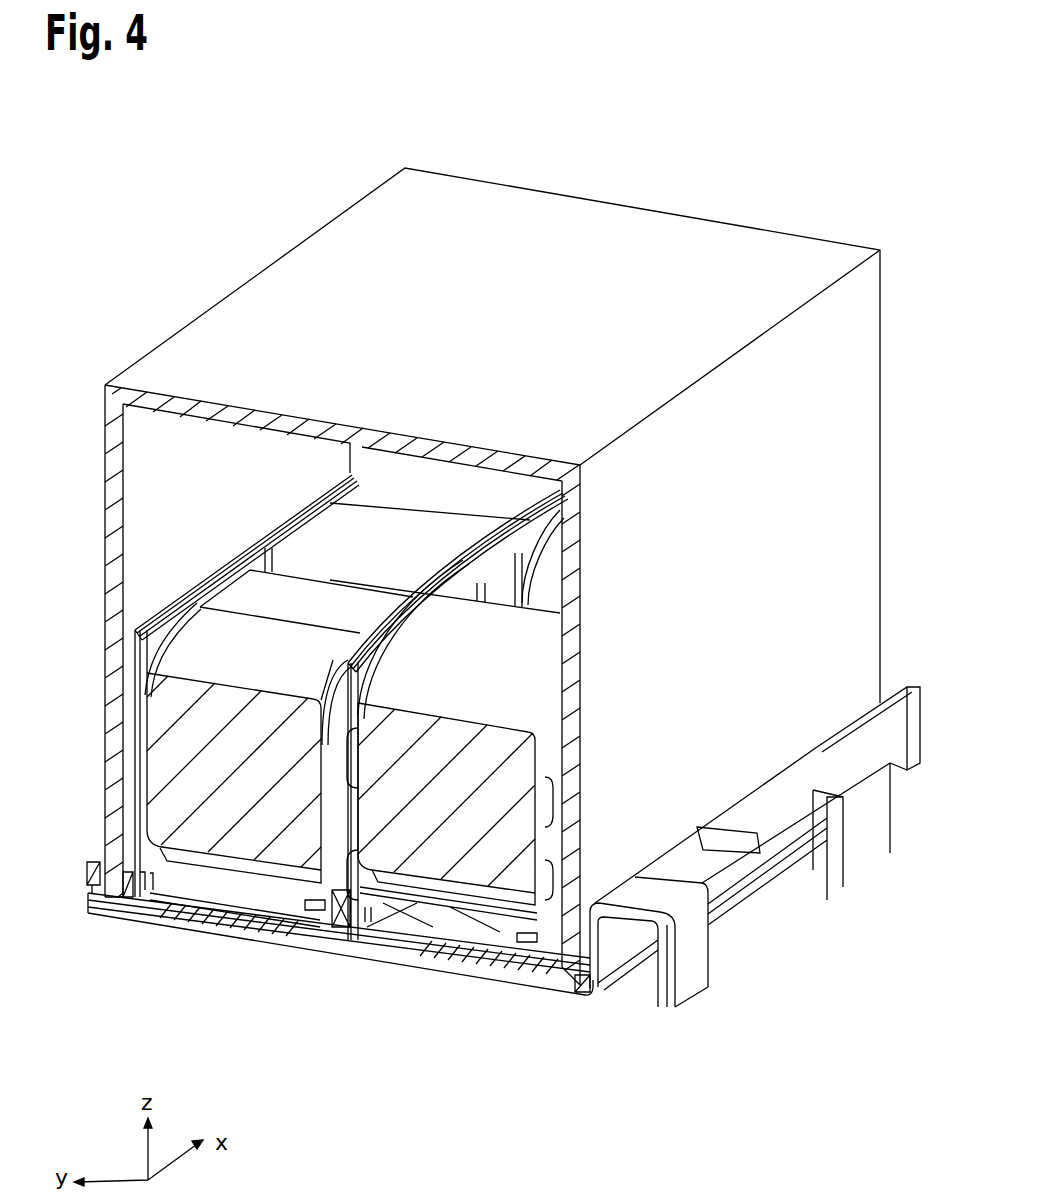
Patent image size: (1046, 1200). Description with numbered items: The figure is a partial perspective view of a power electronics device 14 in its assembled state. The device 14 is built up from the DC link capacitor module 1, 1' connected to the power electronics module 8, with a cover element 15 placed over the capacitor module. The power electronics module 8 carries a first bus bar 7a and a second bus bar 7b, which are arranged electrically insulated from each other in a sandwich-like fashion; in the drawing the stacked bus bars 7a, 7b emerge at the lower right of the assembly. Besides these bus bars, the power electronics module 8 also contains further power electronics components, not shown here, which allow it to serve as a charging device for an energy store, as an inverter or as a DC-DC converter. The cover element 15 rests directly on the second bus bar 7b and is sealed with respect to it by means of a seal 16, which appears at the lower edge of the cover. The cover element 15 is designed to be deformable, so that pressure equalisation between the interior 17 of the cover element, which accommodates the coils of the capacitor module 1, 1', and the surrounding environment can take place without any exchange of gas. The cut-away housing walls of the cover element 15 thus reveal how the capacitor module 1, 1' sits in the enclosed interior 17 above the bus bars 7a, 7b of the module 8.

The power electronics device 14 is at (222, 213).
The cover element 15 is at (488, 200).
The DC link capacitor module 1 is at (224, 686).
The battery cell 1' is at (445, 722).
The interior of the cover element 17 is at (158, 522).
The seal 16 is at (87, 873).
The power electronics module 8 is at (403, 960).
The first bus bar 7a is at (660, 1002).
The second bus bar 7b is at (690, 992).